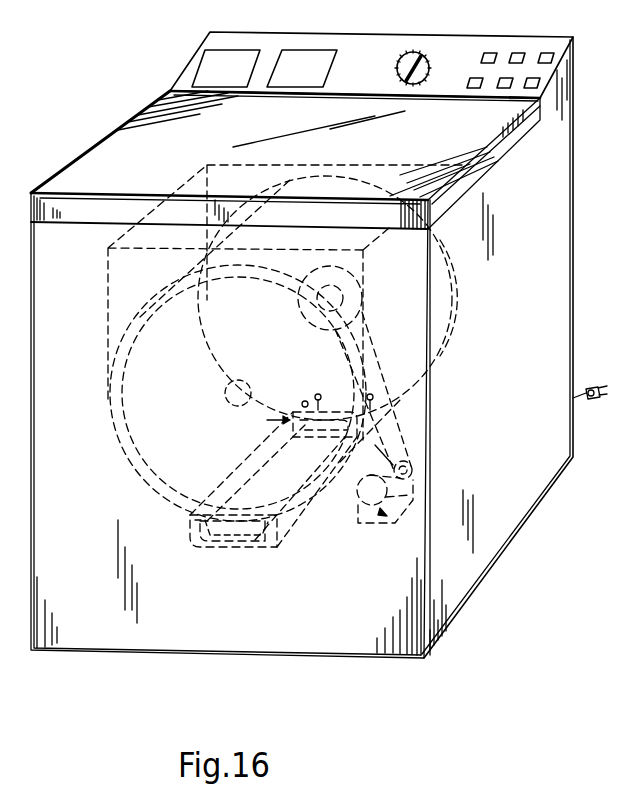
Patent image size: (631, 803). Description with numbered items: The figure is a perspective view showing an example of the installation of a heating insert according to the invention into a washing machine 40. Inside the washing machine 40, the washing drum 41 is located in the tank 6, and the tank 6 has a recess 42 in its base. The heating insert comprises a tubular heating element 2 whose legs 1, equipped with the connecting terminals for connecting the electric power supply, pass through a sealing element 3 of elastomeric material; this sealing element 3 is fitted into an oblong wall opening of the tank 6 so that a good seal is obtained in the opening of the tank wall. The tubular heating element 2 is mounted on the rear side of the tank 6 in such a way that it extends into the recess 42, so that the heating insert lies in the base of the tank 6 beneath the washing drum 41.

The washing machine 40 is at (60, 168).
The washing drum 41 is at (126, 372).
The tank 6 is at (231, 382).
The legs 1 is at (318, 404).
The tubular heating element 2 is at (267, 548).
The sealing element 3 is at (303, 402).
The recess 42 is at (212, 547).